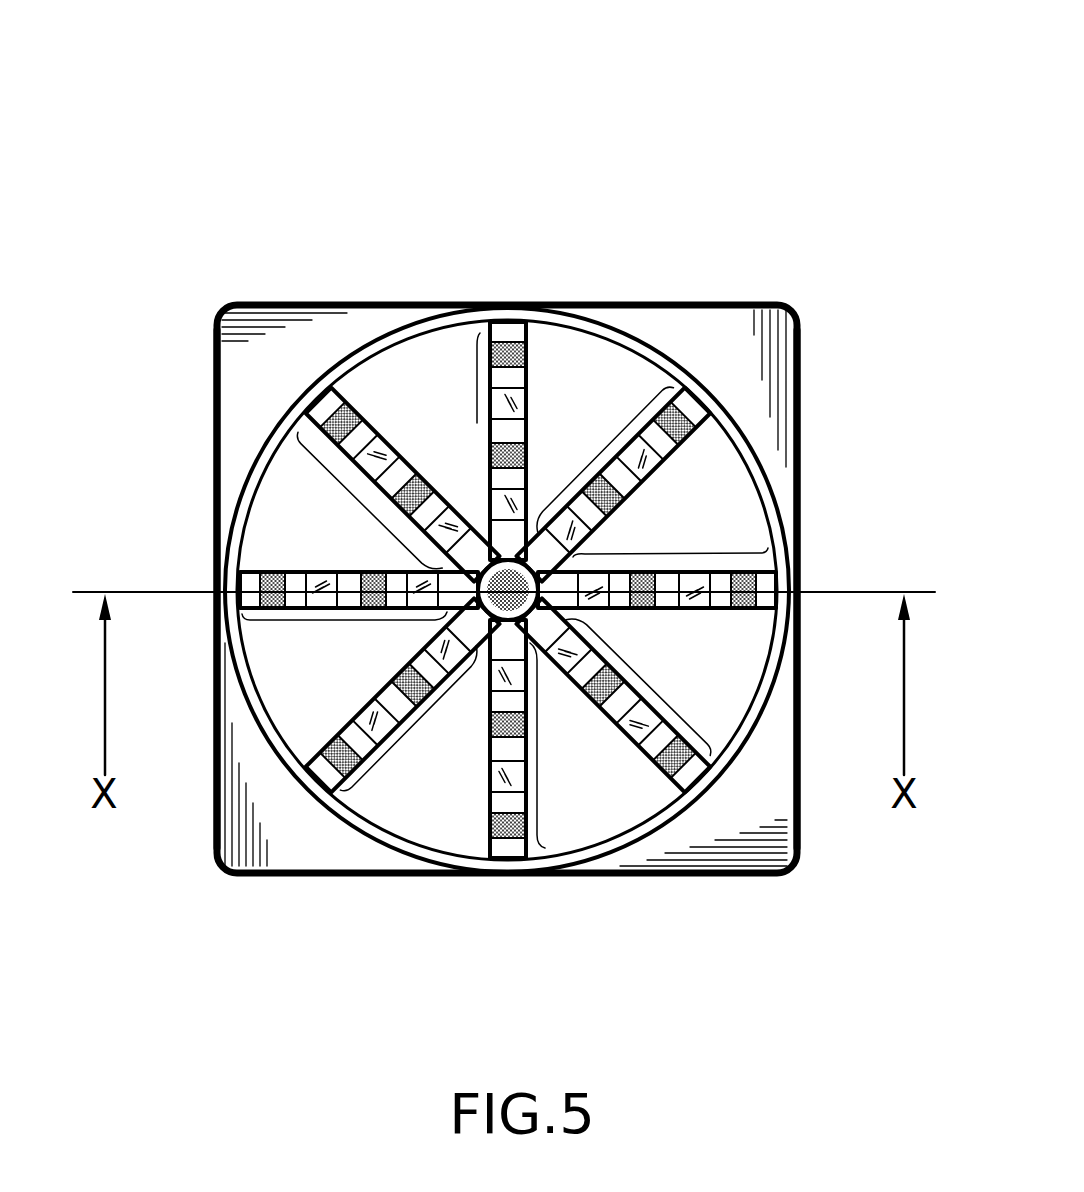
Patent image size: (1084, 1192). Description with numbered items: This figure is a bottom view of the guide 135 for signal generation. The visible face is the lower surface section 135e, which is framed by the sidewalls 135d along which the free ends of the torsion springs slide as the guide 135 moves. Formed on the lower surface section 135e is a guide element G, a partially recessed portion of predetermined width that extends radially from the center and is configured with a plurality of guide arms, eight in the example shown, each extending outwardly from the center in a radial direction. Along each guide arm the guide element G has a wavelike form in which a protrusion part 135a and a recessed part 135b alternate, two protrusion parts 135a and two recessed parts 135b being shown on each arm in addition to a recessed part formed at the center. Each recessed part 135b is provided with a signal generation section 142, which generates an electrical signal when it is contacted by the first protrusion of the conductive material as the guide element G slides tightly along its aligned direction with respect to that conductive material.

The guide for signal generation 135 is at (567, 262).
The protrusion part 135a is at (530, 400).
The recessed part 135b is at (371, 423).
The sidewall 135d is at (215, 393).
The lower surface section 135e is at (773, 300).
The signal generation section 142 is at (503, 342).
The guide element G is at (477, 424).